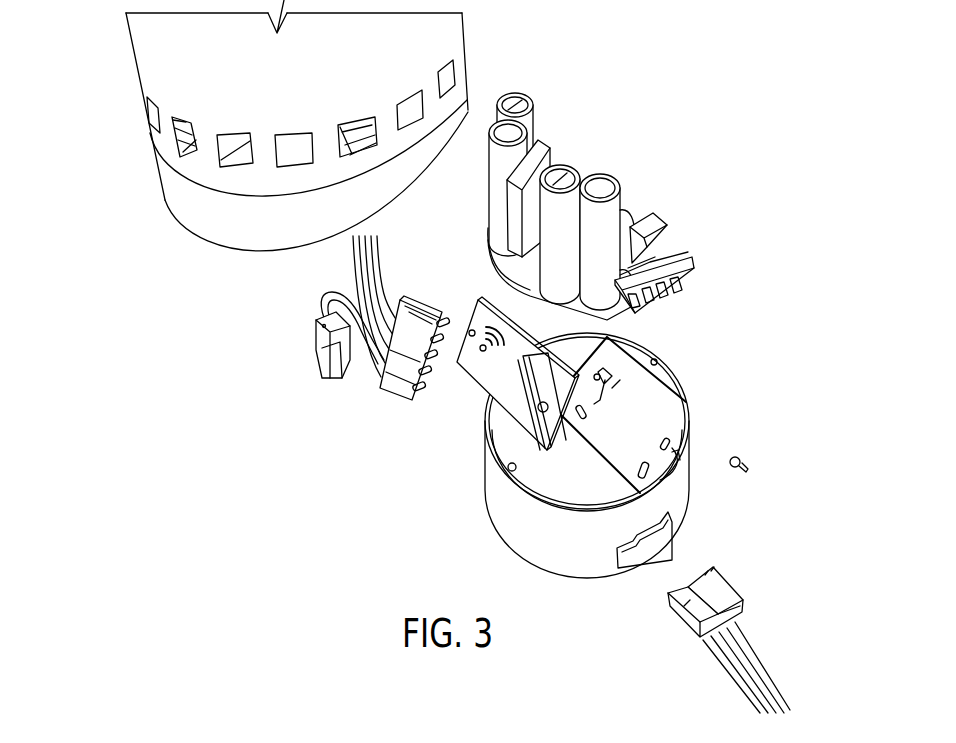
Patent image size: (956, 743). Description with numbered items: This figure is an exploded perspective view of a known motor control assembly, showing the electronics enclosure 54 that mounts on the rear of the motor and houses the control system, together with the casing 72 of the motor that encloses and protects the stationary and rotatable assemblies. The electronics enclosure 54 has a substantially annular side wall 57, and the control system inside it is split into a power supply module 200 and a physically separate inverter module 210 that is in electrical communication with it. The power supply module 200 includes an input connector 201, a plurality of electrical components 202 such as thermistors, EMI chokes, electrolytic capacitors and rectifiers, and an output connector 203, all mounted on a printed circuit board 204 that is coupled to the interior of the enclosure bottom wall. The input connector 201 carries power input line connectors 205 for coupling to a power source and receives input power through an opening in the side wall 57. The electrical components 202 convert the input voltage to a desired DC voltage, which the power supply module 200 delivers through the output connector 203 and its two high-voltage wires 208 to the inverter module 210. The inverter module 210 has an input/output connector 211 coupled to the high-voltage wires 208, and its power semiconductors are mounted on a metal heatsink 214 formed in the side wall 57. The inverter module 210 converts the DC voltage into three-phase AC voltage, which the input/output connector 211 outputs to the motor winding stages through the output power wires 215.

The casing 72 is at (137, 72).
The output power wires 215 is at (377, 256).
The high-voltage wires 208 is at (365, 368).
The output connector 203 is at (320, 338).
The input/output connector 211 is at (393, 383).
The electronics enclosure 54 is at (490, 498).
The side wall 57 is at (547, 537).
The heatsink 214 is at (648, 400).
The inverter module 210 is at (490, 373).
The power supply module 200 is at (683, 156).
The printed circuit board 204 is at (520, 263).
The electrical components 202 is at (560, 178).
The input connector 201 is at (673, 250).
The power input line connectors 205 is at (742, 647).